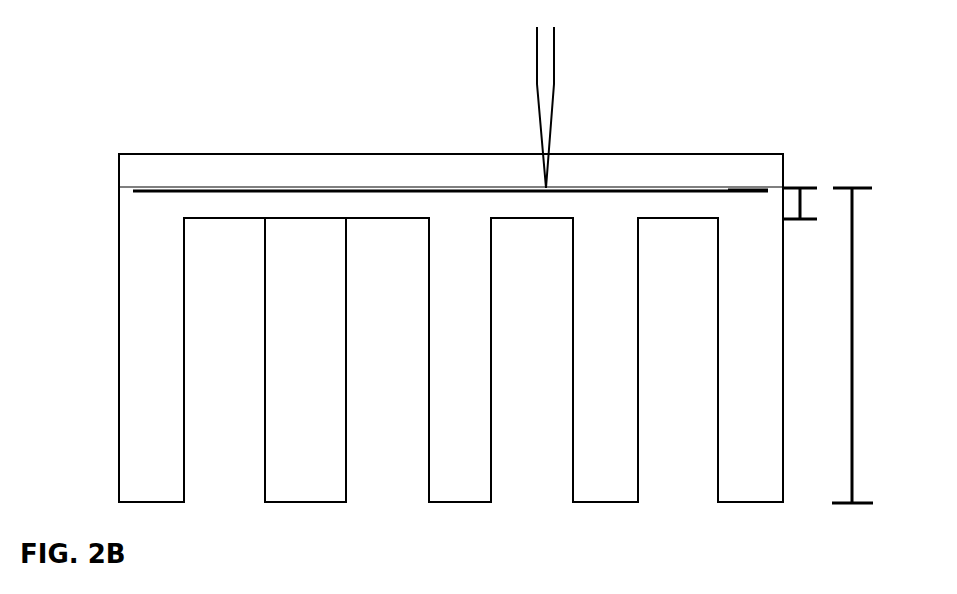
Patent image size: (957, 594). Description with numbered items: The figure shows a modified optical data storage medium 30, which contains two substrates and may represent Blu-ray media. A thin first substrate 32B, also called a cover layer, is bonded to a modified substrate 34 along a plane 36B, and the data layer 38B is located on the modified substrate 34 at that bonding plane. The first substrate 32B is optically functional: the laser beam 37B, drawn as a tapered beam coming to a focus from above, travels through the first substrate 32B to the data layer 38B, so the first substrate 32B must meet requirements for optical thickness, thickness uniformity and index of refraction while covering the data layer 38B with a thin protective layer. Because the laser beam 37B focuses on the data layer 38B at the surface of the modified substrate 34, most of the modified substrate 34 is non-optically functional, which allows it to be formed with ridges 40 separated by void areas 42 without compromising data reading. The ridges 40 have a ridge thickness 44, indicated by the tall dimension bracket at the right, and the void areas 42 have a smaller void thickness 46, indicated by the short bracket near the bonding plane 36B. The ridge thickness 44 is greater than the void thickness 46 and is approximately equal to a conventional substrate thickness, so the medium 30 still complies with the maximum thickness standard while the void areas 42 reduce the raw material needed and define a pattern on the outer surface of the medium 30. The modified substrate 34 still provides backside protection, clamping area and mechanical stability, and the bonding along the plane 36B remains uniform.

The modified optical data storage medium 30 is at (361, 146).
The first substrate 32B is at (119, 166).
The modified substrate 34 is at (119, 405).
The plane 36B is at (128, 187).
The laser beam 37B is at (537, 88).
The data layer 38B is at (728, 190).
The ridges 40 is at (302, 448).
The void areas 42 is at (396, 447).
The ridge thickness 44 is at (845, 470).
The void thickness 46 is at (803, 200).